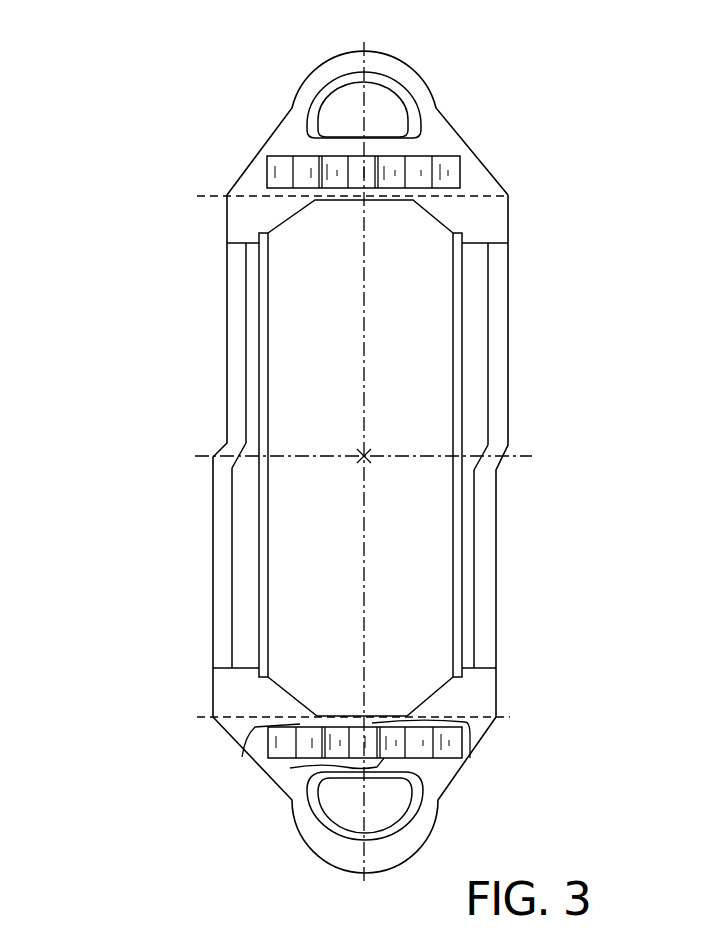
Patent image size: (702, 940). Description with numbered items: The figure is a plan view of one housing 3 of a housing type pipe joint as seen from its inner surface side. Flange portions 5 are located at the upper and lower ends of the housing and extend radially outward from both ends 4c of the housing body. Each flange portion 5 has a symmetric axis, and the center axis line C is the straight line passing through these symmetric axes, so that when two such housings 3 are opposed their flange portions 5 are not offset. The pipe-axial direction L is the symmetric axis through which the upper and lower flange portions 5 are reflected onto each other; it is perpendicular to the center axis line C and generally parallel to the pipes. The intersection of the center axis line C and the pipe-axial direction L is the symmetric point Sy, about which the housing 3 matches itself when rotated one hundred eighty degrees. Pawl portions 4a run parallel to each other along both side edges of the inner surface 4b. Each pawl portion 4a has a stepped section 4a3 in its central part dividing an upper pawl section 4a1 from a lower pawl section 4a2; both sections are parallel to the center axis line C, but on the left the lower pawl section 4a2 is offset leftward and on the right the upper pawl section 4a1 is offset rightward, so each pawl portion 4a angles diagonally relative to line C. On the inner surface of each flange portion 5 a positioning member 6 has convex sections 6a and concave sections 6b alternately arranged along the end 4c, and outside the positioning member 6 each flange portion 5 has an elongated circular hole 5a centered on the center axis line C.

The housing 3 is at (146, 64).
The pawl portion 4a is at (108, 347).
The upper pawl section 4a1 is at (230, 342).
The lower pawl section 4a2 is at (218, 562).
The stepped section 4a3 is at (223, 448).
The inner surface 4b is at (305, 240).
The both ends 4c is at (222, 192).
The flange portion 5 is at (492, 52).
The elongated circular hole 5a is at (331, 97).
The positioning member 6 is at (272, 154).
The convex section 6a is at (242, 758).
The concave section 6b is at (373, 767).
The center axis line C is at (364, 447).
The pipe-axial direction L is at (513, 455).
The symmetric point Sy is at (357, 461).